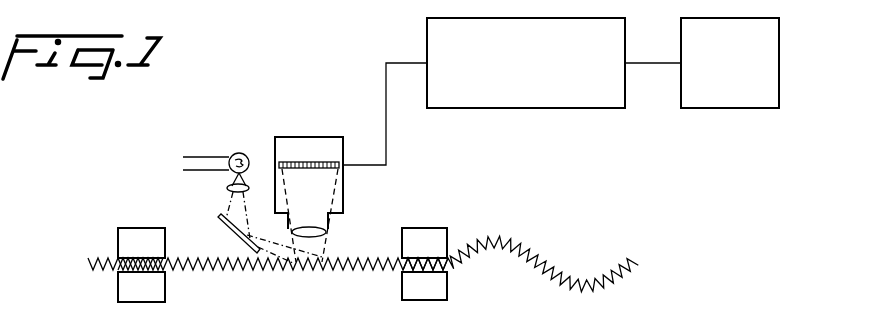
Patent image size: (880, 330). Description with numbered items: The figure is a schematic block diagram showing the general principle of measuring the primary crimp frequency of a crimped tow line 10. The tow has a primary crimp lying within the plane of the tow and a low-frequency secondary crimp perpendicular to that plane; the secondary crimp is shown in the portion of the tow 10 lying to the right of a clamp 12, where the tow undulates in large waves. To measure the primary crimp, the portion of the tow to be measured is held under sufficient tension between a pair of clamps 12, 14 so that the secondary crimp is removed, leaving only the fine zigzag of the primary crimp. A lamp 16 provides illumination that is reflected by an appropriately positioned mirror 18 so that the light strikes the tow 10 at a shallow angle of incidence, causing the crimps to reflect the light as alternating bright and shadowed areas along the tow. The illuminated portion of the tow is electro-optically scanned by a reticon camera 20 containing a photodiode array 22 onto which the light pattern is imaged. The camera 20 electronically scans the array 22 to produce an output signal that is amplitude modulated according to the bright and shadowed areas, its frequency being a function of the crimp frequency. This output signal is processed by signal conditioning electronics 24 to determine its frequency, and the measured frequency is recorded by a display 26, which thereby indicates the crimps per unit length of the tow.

The crimped tow line 10 is at (540, 262).
The clamp 12 is at (432, 228).
The clamp 14 is at (130, 233).
The lamp 16 is at (235, 153).
The mirror 18 is at (232, 233).
The reticon camera 20 is at (347, 194).
The photodiode array 22 is at (319, 156).
The signal conditioning electronics 24 is at (577, 102).
The display 26 is at (775, 90).